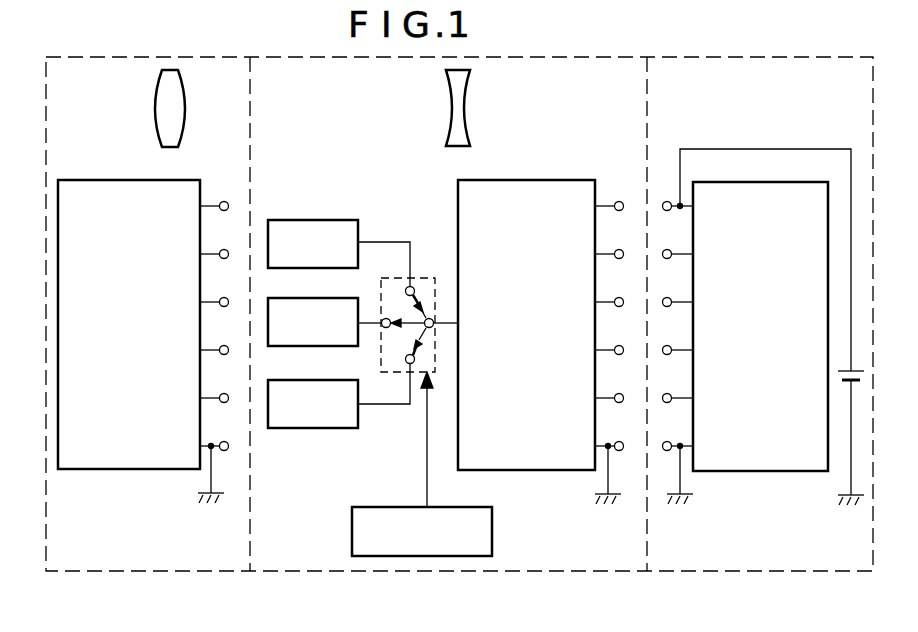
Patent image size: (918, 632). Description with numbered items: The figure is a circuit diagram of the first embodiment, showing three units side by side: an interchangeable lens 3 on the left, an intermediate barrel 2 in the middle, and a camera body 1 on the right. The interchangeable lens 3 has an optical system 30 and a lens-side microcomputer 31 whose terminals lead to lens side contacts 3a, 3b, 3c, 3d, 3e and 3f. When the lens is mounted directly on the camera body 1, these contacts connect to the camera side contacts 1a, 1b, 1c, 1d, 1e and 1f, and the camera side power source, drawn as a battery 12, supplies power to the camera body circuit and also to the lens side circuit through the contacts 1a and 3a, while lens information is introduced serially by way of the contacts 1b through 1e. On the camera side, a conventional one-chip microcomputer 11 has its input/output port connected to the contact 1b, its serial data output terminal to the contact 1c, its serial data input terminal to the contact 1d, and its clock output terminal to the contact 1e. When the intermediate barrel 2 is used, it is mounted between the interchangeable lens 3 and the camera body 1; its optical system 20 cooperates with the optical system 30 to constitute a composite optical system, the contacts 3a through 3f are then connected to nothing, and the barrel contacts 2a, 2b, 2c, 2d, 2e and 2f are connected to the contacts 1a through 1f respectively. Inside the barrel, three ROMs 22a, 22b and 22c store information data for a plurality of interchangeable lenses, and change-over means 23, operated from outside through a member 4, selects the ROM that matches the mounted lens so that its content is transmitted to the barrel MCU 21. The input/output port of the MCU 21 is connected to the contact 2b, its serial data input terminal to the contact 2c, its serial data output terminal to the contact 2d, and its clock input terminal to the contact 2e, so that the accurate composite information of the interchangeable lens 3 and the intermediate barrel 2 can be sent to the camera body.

The camera body 1 is at (670, 565).
The intermediate barrel 2 is at (533, 565).
The interchangeable lens 3 is at (195, 562).
The member 4 is at (352, 525).
The one-chip microcomputer (MCU) 11 is at (763, 181).
The battery (power source) 12 is at (846, 384).
The camera side contact 1a is at (667, 211).
The camera side contact 1b is at (667, 259).
The camera side contact 1c is at (667, 307).
The camera side contact 1d is at (667, 355).
The camera side contact 1e is at (667, 403).
The camera side contact 1f is at (667, 451).
The optical system 20 is at (470, 86).
The MCU 21 is at (500, 180).
The ROM 22a is at (289, 220).
The ROM 22b is at (289, 298).
The ROM 22c is at (289, 380).
The change-over means 23 is at (413, 285).
The intermediate barrel contact 2a is at (619, 211).
The intermediate barrel contact 2b is at (619, 259).
The intermediate barrel contact 2c is at (619, 307).
The intermediate barrel contact 2d is at (619, 355).
The intermediate barrel contact 2e is at (619, 403).
The intermediate barrel contact 2f is at (619, 451).
The optical system 30 is at (184, 86).
The microcomputer of third unit 31 is at (181, 180).
The lens side contact 3a is at (224, 211).
The lens side contact 3b is at (224, 259).
The lens side contact 3c is at (224, 307).
The lens side contact 3d is at (224, 355).
The lens side contact 3e is at (224, 403).
The lens side contact 3f is at (224, 451).